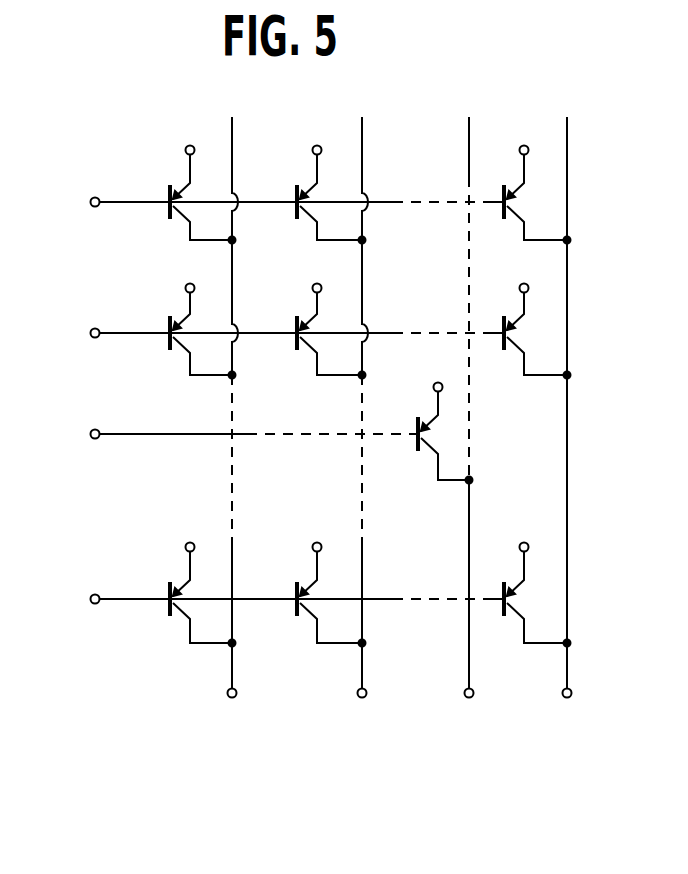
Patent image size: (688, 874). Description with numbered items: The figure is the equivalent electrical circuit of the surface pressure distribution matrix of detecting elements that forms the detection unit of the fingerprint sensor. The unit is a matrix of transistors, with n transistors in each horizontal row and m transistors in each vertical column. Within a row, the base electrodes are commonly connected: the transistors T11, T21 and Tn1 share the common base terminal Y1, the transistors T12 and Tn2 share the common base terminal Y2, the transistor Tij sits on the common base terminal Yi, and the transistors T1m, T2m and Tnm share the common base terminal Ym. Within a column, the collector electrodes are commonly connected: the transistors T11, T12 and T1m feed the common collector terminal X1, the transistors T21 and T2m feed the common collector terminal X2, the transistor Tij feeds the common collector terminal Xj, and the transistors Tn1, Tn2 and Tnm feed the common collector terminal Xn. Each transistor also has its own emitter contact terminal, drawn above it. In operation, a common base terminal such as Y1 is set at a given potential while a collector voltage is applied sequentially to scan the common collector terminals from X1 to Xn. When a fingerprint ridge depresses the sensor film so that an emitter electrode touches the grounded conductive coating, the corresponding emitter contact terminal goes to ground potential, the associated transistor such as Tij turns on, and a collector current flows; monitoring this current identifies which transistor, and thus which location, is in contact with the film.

The common base terminal Y1 is at (278, 200).
The common base terminal Y2 is at (278, 331).
The common base terminal Yi is at (235, 435).
The common base terminal Ym is at (278, 600).
The common collector terminal X1 is at (233, 427).
The common collector terminal X2 is at (362, 427).
The common collector terminal Xj is at (471, 426).
The common collector terminal Xn is at (568, 427).
The transistor T11 is at (184, 200).
The transistor T21 is at (311, 200).
The transistor Tn1 is at (524, 199).
The transistor T12 is at (184, 334).
The transistor Tn2 is at (518, 335).
The transistor Tij is at (427, 433).
The transistor T1m is at (179, 601).
The transistor T2m is at (307, 601).
The transistor Tnm is at (513, 602).